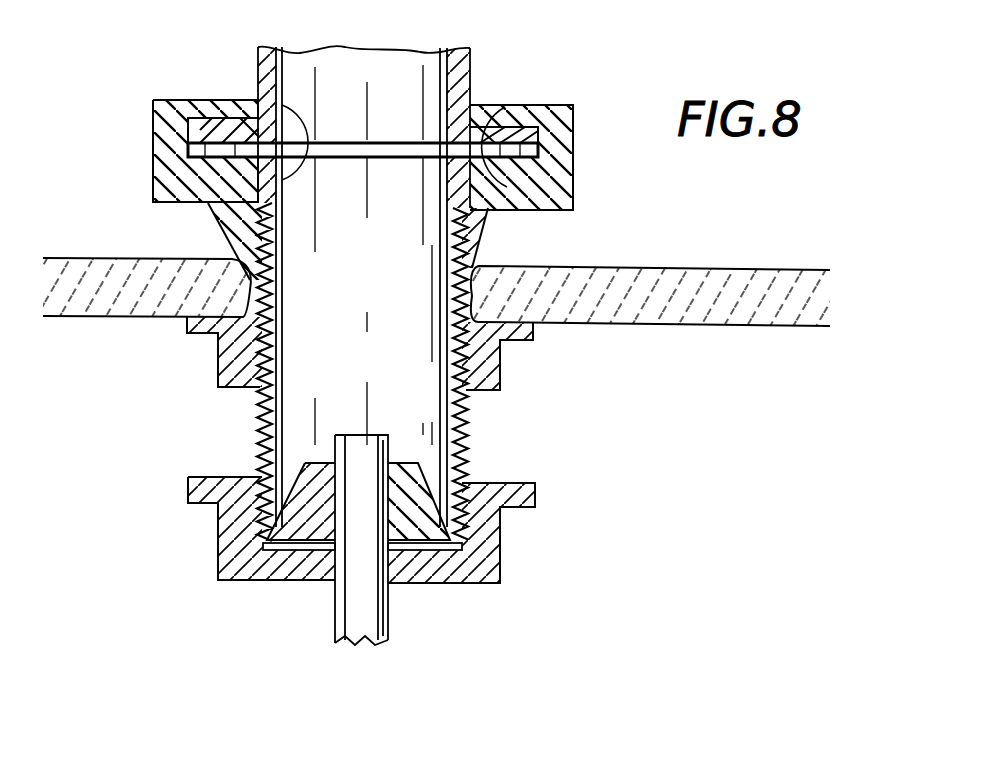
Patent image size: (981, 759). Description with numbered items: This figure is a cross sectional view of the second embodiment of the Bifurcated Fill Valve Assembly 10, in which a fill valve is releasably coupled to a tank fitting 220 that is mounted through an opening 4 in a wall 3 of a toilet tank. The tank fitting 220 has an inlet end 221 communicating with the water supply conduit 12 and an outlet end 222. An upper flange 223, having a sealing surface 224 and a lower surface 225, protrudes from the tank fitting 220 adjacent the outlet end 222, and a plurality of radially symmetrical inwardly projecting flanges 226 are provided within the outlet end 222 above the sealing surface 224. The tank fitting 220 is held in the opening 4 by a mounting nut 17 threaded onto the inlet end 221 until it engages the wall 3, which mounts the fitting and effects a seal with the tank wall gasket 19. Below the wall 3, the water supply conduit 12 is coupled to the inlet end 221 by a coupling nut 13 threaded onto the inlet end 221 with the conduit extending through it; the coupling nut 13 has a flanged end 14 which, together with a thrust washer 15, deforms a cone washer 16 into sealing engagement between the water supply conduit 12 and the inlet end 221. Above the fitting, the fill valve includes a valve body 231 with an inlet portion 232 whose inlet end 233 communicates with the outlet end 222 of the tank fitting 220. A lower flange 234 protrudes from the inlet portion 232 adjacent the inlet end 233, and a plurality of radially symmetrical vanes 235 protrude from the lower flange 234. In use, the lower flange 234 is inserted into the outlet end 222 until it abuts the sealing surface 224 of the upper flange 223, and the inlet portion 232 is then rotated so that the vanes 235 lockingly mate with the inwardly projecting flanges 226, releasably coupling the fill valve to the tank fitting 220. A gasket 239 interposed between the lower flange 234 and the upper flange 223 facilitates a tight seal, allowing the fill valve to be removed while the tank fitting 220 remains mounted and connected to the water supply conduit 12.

The Bifurcated Fill Valve Assembly 10 is at (735, 196).
The valve body 231 is at (478, 45).
The inlet portion 232 is at (463, 90).
The inlet end 233 is at (300, 134).
The radially symmetrical inwardly projecting flanges 226 is at (202, 108).
The sealing surface 224 is at (190, 126).
The radially symmetrical vanes 235 is at (190, 148).
The outlet end 222 is at (153, 169).
The upper flange 223 is at (173, 185).
The lower flange 234 is at (520, 112).
The gasket 239 is at (513, 187).
The lower surface 225 is at (500, 215).
The tank fitting 220 is at (560, 252).
The tank wall gasket 19 is at (233, 227).
The wall 3 is at (100, 305).
The opening 4 is at (218, 338).
The mounting nut 17 is at (482, 358).
The cone washer 16 is at (457, 490).
The inlet end 221 is at (262, 498).
The coupling nut 13 is at (500, 545).
The thrust washer 15 is at (286, 551).
The flanged end 14 is at (455, 552).
The water supply conduit 12 is at (388, 625).